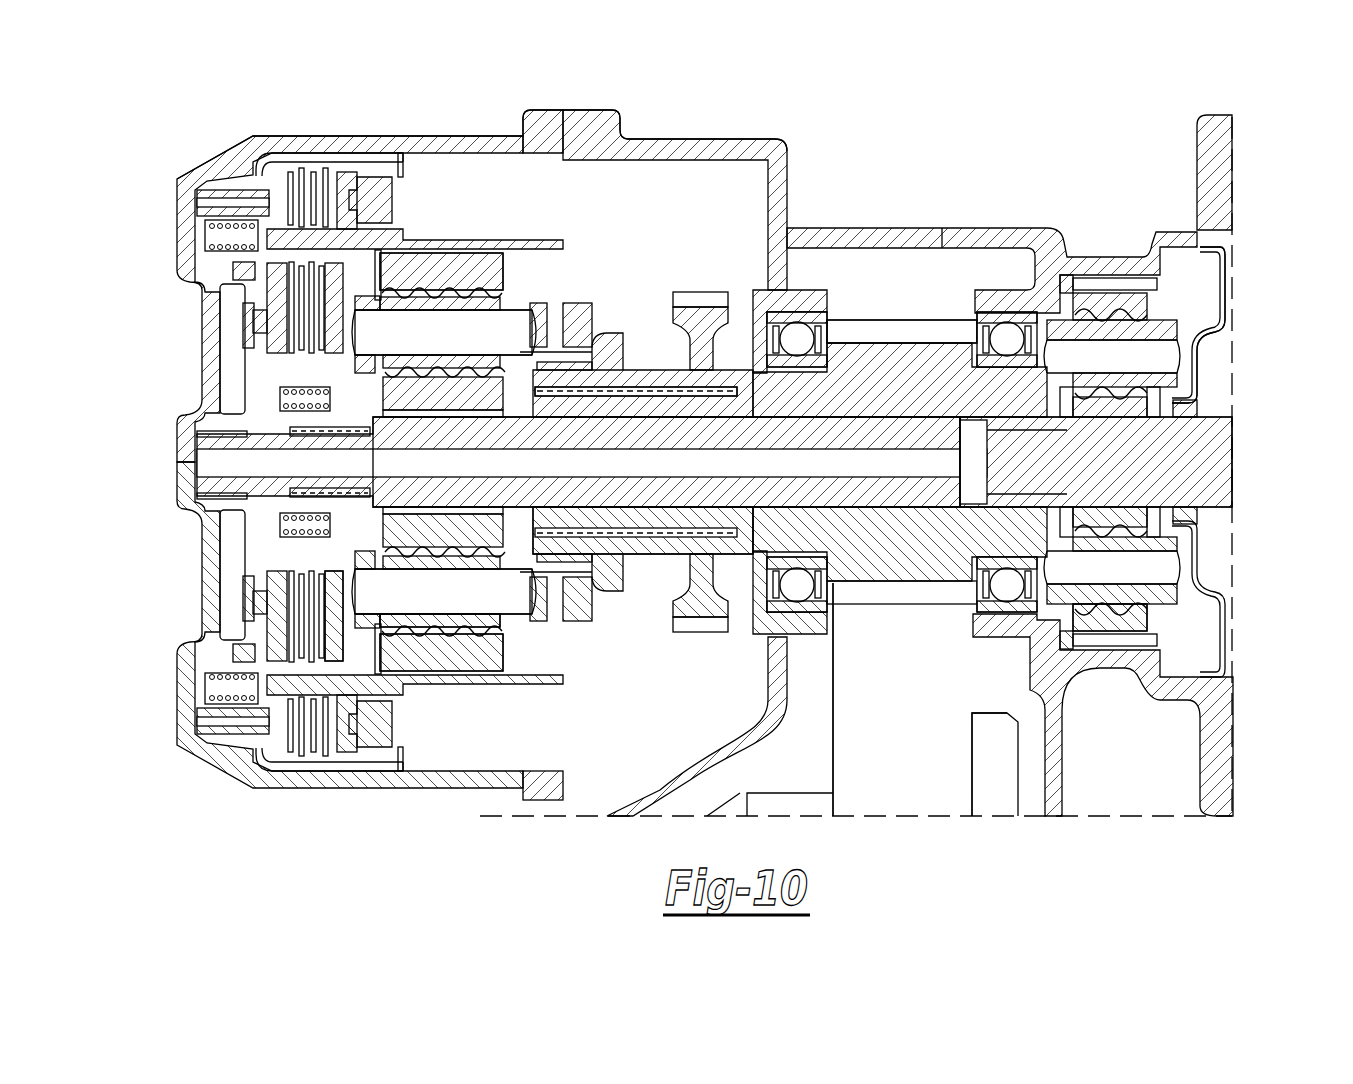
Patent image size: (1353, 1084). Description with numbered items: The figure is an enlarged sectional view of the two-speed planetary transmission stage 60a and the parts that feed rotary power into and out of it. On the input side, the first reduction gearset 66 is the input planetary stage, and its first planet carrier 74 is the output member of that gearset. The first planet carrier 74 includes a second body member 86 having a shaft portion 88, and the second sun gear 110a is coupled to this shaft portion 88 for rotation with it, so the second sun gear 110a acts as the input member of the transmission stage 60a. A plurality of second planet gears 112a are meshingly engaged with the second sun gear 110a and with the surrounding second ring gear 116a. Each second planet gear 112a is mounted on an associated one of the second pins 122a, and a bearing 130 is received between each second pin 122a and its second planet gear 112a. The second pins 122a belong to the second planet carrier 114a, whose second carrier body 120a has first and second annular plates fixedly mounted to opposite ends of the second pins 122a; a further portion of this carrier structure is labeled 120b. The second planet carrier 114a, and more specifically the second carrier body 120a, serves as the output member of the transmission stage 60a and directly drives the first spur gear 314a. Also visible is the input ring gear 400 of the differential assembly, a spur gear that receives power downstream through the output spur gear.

The two-speed planetary transmission stage 60a is at (437, 183).
The second ring gear 116a is at (472, 275).
The bearing plates 120b is at (587, 382).
The first spur gear 314a is at (928, 330).
The first reduction gearset 66 is at (1200, 289).
The bearing 130 is at (413, 308).
The shaft portion 88 is at (805, 433).
The second body member 86 is at (942, 436).
The second pins 122a is at (375, 597).
The second carrier body 120a is at (367, 623).
The second sun gear 110a is at (465, 533).
The second planet gears 112a is at (477, 627).
The second planet carrier 114a is at (357, 650).
The first planet carrier 74 is at (1167, 597).
The input ring gear 400 is at (930, 785).